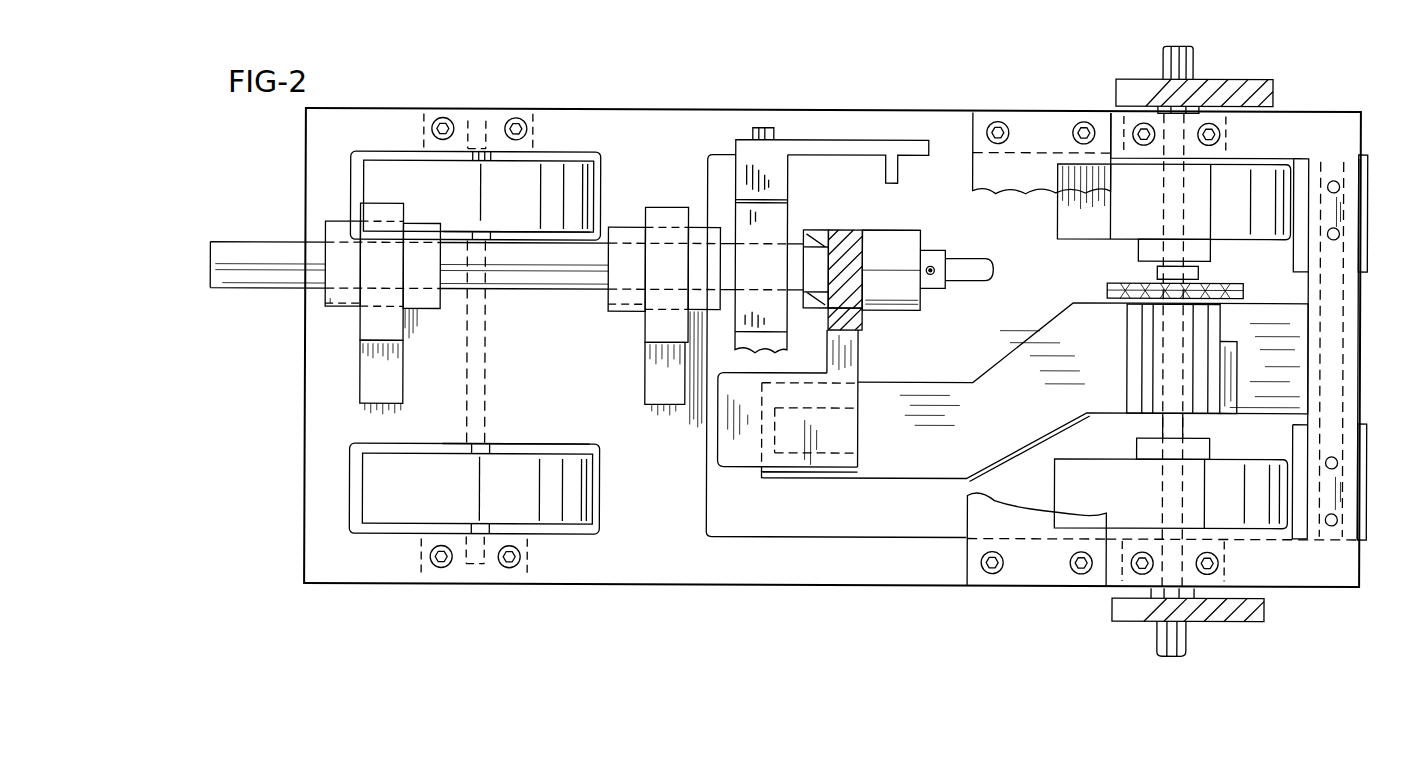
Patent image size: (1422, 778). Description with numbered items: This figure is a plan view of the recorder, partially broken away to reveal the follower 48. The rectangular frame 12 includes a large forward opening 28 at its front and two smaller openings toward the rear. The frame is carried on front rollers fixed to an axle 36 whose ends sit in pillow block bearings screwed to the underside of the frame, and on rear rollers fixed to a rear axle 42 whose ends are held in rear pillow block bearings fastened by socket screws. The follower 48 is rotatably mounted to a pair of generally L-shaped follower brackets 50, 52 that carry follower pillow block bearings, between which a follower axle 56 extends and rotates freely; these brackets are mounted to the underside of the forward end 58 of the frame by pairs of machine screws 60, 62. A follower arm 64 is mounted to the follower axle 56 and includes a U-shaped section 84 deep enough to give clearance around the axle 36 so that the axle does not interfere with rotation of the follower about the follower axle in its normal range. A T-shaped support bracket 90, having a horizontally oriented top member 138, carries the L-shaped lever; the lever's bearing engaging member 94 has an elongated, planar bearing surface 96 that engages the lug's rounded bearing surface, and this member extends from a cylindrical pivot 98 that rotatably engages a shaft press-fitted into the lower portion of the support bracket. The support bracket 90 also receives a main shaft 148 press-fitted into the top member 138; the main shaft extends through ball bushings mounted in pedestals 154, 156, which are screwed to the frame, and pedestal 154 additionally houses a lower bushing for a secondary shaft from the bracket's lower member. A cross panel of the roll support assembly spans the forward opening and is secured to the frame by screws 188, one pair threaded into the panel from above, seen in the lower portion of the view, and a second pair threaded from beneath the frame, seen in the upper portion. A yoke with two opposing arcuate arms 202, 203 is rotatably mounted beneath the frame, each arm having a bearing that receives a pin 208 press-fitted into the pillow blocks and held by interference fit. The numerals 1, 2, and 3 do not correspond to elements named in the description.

The gear 1 is at (1107, 285).
The spindle assembly 2 is at (878, 230).
The bolt 3 is at (990, 120).
The frame 12 is at (930, 80).
The forward opening 28 is at (790, 537).
The axle 36 is at (1198, 268).
The rear axle 42 is at (477, 162).
The follower 48 is at (928, 368).
The follower bracket 50 is at (1367, 235).
The follower bracket 52 is at (1367, 470).
The follower axle 56 is at (1358, 355).
The forward end 58 is at (1345, 566).
The machine screws 60 is at (1340, 232).
The machine screws 62 is at (1340, 520).
The follower arm 64 is at (1035, 409).
The U-shaped section 84 is at (1200, 370).
The support bracket 90 is at (775, 170).
The bearing engaging member 94 is at (850, 358).
The bearing surface 96 is at (845, 441).
The cylindrical pivot 98 is at (905, 235).
The top member 138 is at (810, 230).
The main shaft 148 is at (508, 285).
The pedestal 154 is at (640, 330).
The pedestal 156 is at (405, 362).
The screws 188 is at (1000, 573).
The arcuate arm 202 is at (1262, 78).
The arcuate arm 203 is at (1235, 620).
The pin 208 is at (1158, 632).